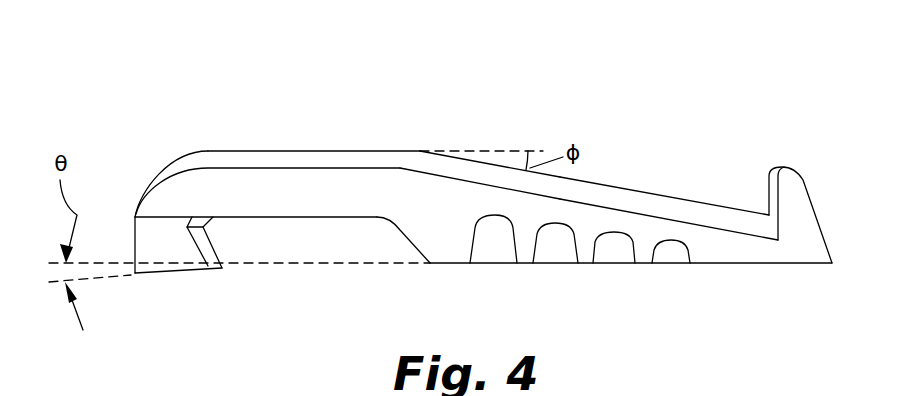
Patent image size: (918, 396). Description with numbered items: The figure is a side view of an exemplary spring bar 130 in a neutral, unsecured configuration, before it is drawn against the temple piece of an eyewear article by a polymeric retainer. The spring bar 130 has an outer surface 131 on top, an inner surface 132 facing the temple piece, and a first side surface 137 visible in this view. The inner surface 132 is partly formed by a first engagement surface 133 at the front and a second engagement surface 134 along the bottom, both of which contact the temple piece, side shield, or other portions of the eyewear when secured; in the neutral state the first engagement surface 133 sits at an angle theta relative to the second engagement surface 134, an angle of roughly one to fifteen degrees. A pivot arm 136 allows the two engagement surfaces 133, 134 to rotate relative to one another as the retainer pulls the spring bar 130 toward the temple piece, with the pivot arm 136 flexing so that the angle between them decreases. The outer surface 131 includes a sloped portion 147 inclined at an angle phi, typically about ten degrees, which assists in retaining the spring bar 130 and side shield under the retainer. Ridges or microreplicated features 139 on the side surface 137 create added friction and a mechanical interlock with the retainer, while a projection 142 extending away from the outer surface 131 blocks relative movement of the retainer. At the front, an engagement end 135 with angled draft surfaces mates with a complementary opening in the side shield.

The spring bar 130 is at (748, 75).
The outer surface 131 is at (312, 150).
The inner surface 132 is at (446, 265).
The first engagement surface 133 is at (185, 272).
The second engagement surface 134 is at (588, 265).
The engagement end 135 is at (158, 172).
The pivot arm 136 is at (233, 190).
The first side surface 137 is at (415, 195).
The microreplicated features 139 is at (502, 253).
The projection 142 is at (800, 170).
The sloped portion 147 is at (652, 192).